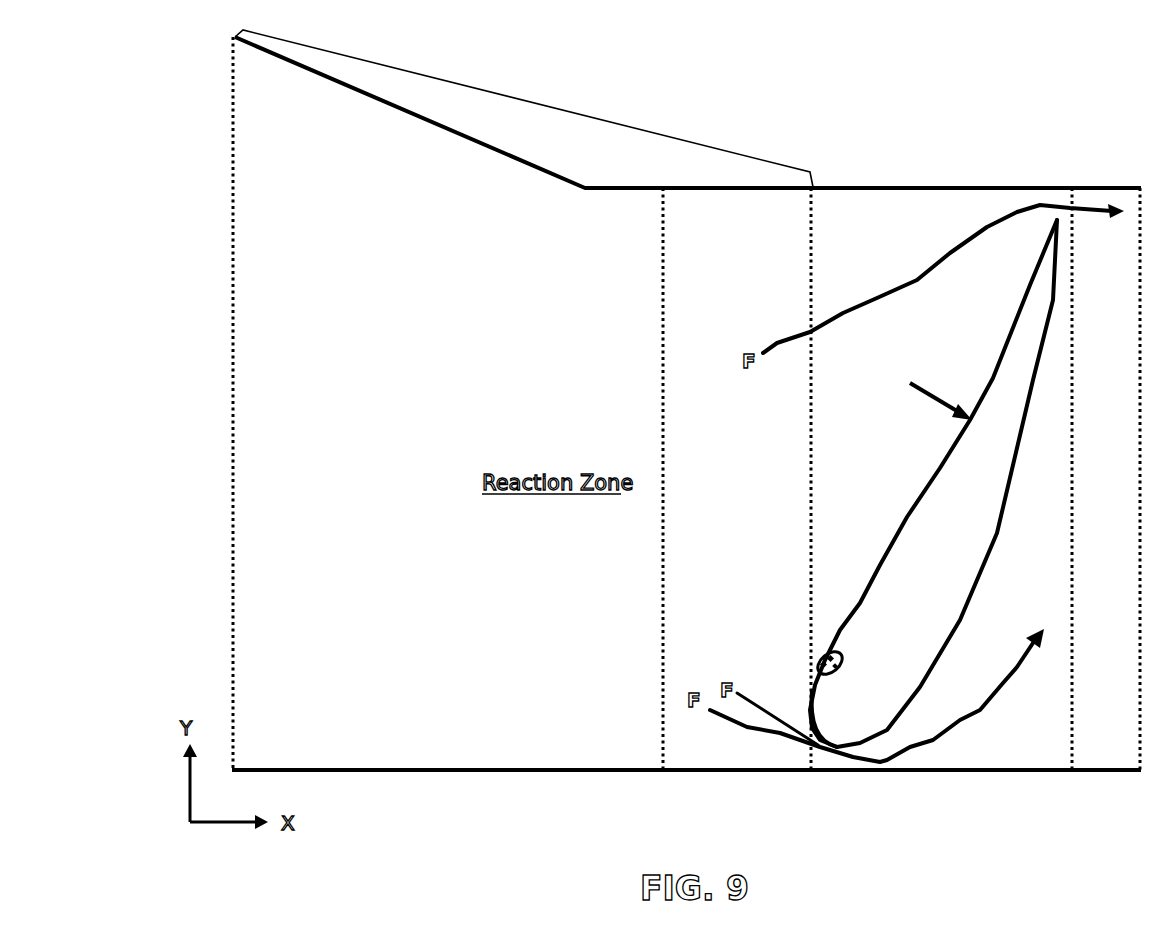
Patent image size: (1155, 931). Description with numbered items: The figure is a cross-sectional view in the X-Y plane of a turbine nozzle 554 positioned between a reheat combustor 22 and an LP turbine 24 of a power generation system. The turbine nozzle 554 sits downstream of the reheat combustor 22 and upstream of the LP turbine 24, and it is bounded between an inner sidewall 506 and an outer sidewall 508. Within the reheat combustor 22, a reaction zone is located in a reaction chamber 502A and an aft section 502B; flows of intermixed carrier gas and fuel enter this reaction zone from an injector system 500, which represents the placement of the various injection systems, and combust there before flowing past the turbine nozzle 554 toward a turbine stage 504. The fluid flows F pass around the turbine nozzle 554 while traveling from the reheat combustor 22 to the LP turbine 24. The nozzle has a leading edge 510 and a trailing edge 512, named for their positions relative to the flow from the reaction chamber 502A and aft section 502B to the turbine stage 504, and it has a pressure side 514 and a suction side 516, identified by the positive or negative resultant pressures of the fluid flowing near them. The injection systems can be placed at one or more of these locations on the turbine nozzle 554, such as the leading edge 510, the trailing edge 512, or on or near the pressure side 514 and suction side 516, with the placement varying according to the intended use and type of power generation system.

The reheat combustor 22 is at (617, 124).
The LP turbine 24 is at (1124, 508).
The injector system 500 is at (836, 647).
The reaction chamber 502A is at (468, 168).
The aft section 502B is at (802, 213).
The turbine stage 504 is at (1127, 383).
The inner sidewall 506 is at (597, 769).
The outer sidewall 508 is at (625, 190).
The leading edge 510 is at (792, 790).
The trailing edge 512 is at (1058, 240).
The pressure side 514 is at (994, 380).
The suction side 516 is at (997, 537).
The turbine nozzle 554 is at (921, 396).